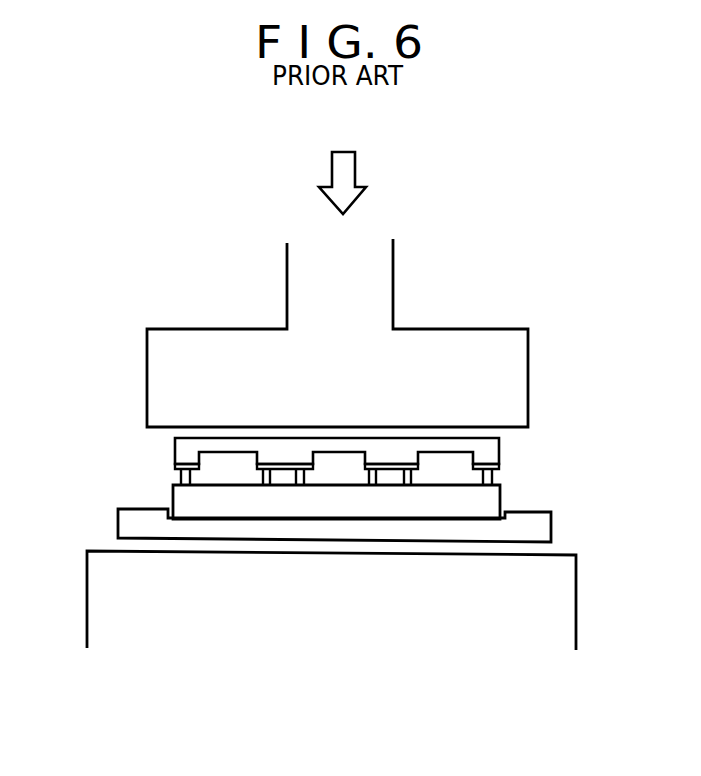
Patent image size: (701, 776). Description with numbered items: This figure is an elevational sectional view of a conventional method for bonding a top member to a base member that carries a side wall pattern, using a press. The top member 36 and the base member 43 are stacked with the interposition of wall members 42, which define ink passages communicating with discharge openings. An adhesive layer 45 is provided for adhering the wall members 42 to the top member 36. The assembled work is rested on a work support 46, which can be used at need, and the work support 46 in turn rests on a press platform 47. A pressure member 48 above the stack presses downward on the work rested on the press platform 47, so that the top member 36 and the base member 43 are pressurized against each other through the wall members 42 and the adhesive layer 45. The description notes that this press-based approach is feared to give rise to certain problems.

The pressure member 48 is at (510, 365).
The top member 36 is at (499, 447).
The adhesive layer 45 is at (499, 463).
The wall members 42 is at (496, 483).
The base member 43 is at (487, 503).
The work support 46 is at (533, 532).
The press platform 47 is at (545, 609).